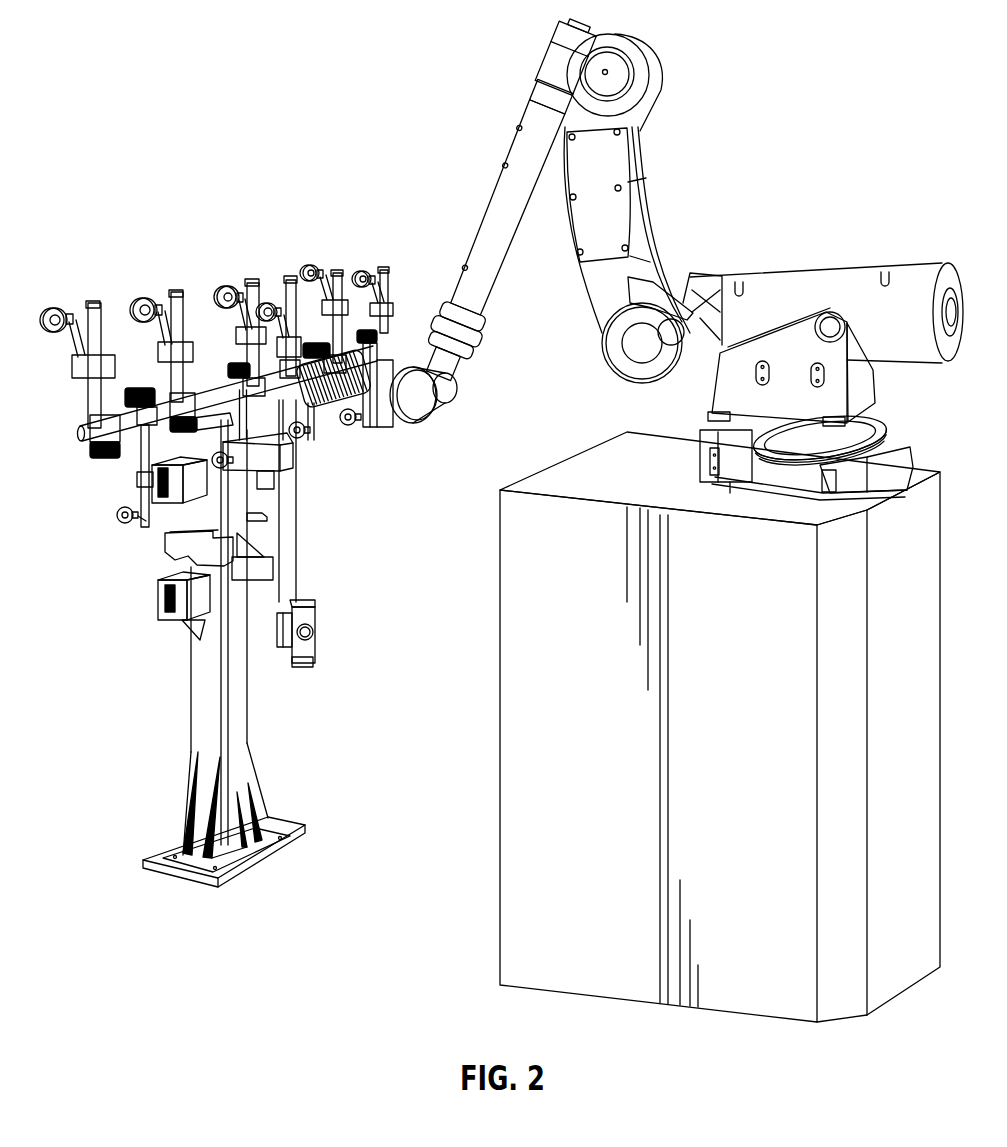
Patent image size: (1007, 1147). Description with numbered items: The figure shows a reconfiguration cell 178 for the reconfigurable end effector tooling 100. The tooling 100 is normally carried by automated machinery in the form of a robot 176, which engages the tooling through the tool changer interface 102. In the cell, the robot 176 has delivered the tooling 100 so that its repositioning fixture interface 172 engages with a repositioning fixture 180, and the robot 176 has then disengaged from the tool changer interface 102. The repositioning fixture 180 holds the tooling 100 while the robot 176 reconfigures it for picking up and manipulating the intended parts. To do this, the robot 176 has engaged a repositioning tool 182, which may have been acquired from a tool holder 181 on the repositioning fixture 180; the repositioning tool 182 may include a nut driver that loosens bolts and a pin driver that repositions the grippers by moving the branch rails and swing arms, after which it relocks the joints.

The tooling 100 is at (206, 269).
The tool changer interface 102 is at (317, 638).
The repositioning fixture interface 172 is at (293, 464).
The robot 176 is at (660, 208).
The reconfiguration cell 178 is at (417, 107).
The repositioning fixture 180 is at (190, 682).
The tool holder 181 is at (170, 539).
The repositioning tool 182 is at (330, 404).